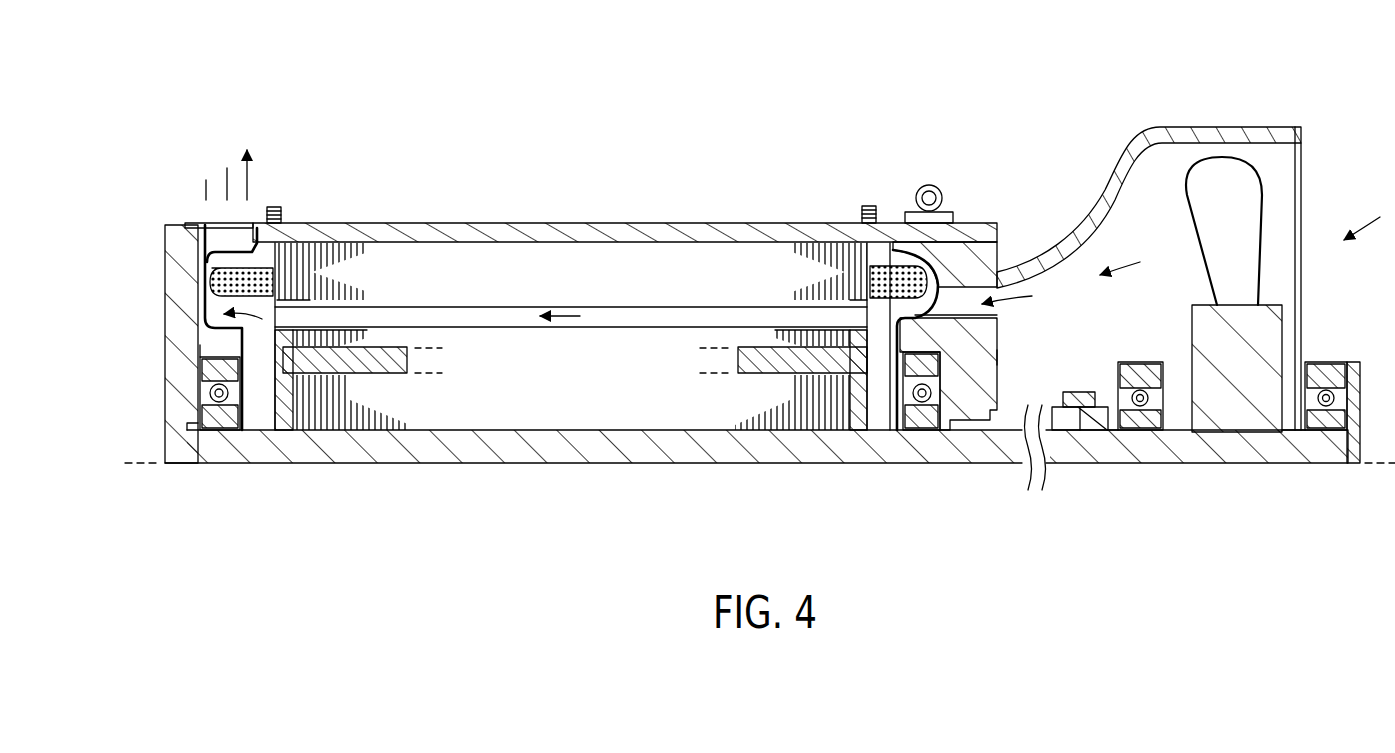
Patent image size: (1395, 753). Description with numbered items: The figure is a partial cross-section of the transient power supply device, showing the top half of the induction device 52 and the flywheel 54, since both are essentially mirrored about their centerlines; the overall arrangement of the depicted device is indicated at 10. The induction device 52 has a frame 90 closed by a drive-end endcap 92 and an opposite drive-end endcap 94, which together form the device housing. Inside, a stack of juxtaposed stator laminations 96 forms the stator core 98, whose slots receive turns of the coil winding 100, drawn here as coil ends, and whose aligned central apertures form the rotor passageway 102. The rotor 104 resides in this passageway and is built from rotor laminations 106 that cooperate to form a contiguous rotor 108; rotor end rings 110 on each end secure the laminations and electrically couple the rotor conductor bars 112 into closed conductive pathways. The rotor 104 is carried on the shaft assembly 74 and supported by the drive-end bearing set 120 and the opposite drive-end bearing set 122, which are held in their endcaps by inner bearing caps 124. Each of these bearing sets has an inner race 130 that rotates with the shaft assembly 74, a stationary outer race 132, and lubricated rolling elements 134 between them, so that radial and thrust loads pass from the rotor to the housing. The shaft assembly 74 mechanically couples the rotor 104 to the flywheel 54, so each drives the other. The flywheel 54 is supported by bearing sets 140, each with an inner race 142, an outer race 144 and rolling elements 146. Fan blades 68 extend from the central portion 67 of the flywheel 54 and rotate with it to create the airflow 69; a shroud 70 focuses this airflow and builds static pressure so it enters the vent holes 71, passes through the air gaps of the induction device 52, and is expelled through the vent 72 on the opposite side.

The motor assembly 10 is at (497, 158).
The induction device 52 is at (704, 92).
The flywheel 54 is at (1223, 103).
The central portion 67 is at (1242, 403).
The fan blades 68 is at (1253, 258).
The airflow 69 is at (562, 314).
The shroud 70 is at (1291, 127).
The vent holes 71 is at (967, 302).
The vent 72 is at (201, 221).
The shaft assembly 74 is at (1080, 388).
The frame 90 is at (378, 223).
The drive-end endcap 92 is at (997, 233).
The opposite drive-end endcap 94 is at (184, 223).
The stator laminations 96 is at (333, 243).
The stator core 98 is at (637, 265).
The coil winding 100 is at (896, 268).
The rotor passageway 102 is at (781, 315).
The rotor 104 is at (628, 388).
The rotor laminations 106 is at (349, 430).
The contiguous rotor 108 is at (469, 410).
The rotor end rings 110 is at (868, 432).
The rotor conductor bars 112 is at (312, 366).
The drive-end bearing set 120 is at (1000, 357).
The opposite drive-end bearing set 122 is at (187, 423).
The inner bearing caps 124 is at (997, 331).
The inner race 130 is at (927, 432).
The outer race 132 is at (948, 356).
The rolling elements 134 is at (212, 393).
The bearing sets 140 is at (1322, 365).
The inner race 142 is at (1147, 432).
The outer race 144 is at (1360, 375).
The rolling elements 146 is at (1333, 432).